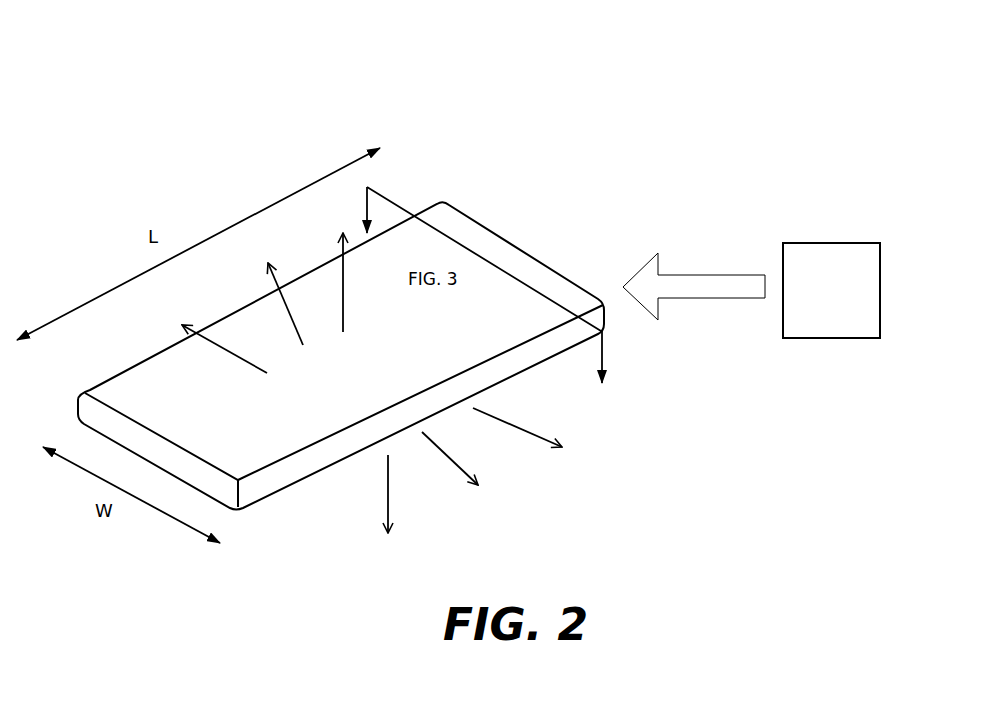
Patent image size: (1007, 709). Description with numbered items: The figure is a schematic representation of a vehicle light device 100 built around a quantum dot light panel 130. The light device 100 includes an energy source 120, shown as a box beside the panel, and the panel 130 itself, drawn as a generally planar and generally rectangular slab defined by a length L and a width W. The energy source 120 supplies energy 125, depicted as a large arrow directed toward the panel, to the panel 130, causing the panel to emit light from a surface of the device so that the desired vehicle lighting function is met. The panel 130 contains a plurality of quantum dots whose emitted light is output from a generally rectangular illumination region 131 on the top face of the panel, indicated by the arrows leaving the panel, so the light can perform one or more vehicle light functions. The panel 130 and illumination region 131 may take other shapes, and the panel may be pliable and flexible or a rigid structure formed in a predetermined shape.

The light device 100 is at (341, 287).
The energy source 120 is at (812, 331).
The energy 125 is at (702, 299).
The quantum dot light panel 130 is at (164, 365).
The illumination region 131 is at (291, 427).